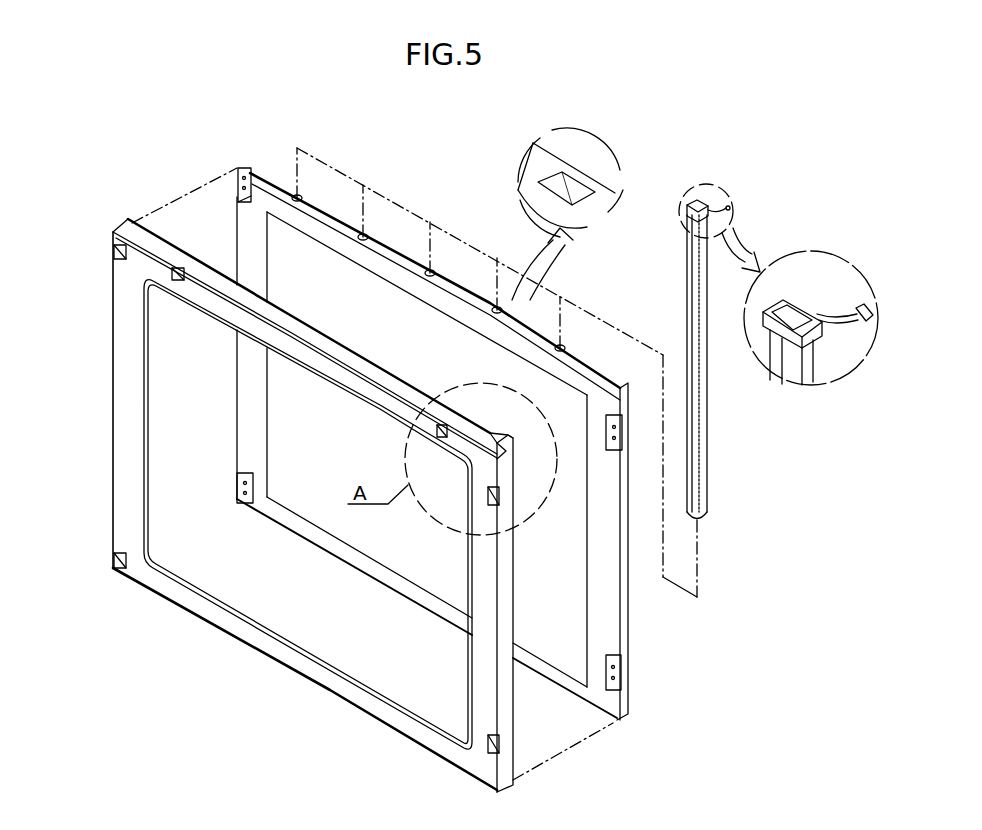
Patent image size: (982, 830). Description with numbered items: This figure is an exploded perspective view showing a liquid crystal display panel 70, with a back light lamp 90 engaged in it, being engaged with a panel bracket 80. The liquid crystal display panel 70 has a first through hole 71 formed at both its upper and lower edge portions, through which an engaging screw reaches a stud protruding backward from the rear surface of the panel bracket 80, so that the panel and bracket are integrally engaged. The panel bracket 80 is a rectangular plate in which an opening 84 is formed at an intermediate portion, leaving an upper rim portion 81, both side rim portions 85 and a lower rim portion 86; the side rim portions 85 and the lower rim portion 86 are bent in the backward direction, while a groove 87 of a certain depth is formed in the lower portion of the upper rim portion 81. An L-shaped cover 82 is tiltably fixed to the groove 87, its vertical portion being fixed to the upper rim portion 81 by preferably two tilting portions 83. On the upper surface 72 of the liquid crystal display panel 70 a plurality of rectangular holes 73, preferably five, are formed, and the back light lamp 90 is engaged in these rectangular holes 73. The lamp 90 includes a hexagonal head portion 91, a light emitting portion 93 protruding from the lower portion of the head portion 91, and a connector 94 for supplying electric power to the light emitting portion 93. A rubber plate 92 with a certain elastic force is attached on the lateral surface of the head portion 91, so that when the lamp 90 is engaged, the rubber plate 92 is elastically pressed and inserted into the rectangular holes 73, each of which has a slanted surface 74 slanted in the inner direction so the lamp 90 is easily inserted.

The liquid crystal display panel 70 is at (249, 158).
The first through hole 71 is at (621, 667).
The upper surface 72 is at (333, 210).
The rectangular hole 73 is at (580, 176).
The slanted surface 74 is at (535, 152).
The panel bracket 80 is at (100, 235).
The upper rim portion 81 is at (158, 270).
The cover 82 is at (140, 237).
The tilting portion 83 is at (180, 276).
The opening 84 is at (143, 350).
The side rim portion 85 is at (122, 313).
The lower rim portion 86 is at (181, 596).
The groove 87 is at (510, 452).
The back light lamp 90 is at (722, 190).
The head portion 91 is at (790, 312).
The rubber plate 92 is at (822, 330).
The light emitting portion 93 is at (797, 350).
The connector 94 is at (843, 305).